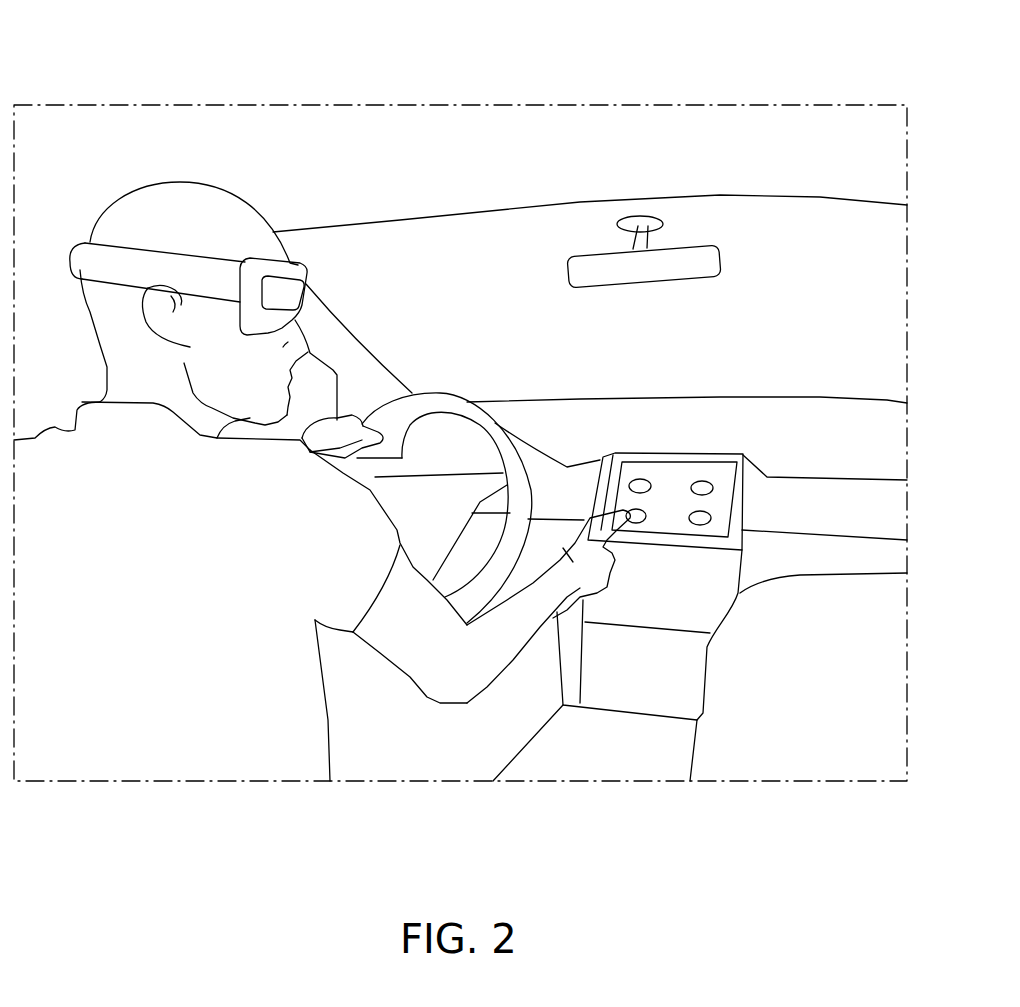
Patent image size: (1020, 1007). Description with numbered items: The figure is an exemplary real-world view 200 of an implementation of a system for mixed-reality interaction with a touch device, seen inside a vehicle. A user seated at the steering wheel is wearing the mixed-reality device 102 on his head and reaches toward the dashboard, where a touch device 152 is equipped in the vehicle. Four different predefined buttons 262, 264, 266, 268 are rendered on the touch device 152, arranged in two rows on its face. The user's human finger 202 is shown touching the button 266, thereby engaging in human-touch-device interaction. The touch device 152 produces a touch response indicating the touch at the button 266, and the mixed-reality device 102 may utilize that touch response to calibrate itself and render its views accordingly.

The real-world view 200 is at (100, 45).
The mixed-reality device 102 is at (265, 272).
The human finger 202 is at (573, 562).
The touch device 152 is at (669, 457).
The predefined button 262 is at (634, 478).
The predefined button 264 is at (698, 490).
The predefined button 266 is at (634, 517).
The predefined button 268 is at (700, 525).